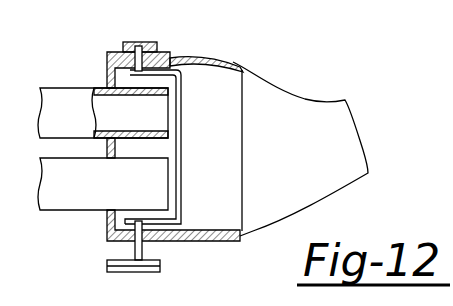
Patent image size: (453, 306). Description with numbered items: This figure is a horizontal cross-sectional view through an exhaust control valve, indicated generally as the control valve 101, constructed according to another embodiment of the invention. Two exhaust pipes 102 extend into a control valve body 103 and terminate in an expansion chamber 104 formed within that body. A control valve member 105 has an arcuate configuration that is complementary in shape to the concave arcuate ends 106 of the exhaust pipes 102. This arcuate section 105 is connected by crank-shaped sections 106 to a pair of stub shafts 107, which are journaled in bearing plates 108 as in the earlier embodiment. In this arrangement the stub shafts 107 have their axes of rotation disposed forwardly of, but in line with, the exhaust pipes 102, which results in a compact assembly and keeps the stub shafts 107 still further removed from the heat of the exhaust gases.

The control valve 101 is at (258, 61).
The exhaust pipes 102 is at (60, 88).
The control valve body 103 is at (200, 240).
The expansion chamber 104 is at (234, 160).
The control valve member 105 is at (185, 149).
The crank-shaped sections 106 is at (179, 58).
The stub shafts 107 is at (147, 43).
The bearing plates 108 is at (121, 43).